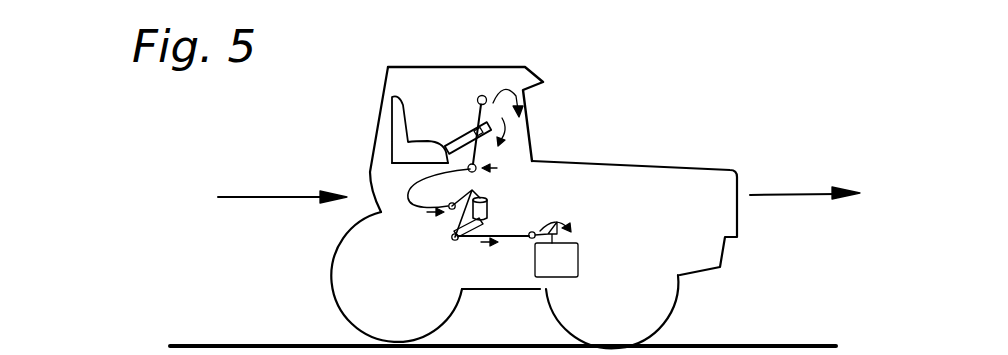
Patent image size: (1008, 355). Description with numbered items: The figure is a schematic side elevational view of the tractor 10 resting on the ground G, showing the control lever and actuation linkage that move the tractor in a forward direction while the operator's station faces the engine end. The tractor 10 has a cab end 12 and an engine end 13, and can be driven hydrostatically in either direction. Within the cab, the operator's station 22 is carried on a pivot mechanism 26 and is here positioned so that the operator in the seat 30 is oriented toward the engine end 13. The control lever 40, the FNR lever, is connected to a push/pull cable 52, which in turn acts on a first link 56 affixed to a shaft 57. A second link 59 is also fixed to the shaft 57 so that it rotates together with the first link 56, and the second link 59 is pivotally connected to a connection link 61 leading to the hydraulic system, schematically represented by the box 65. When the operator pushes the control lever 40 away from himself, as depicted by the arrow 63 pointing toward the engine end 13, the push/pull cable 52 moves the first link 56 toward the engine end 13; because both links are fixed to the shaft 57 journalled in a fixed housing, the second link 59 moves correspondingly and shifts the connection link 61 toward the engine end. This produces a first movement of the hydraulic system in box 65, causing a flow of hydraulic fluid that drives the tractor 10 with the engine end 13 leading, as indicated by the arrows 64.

The tractor 10 is at (670, 73).
The cab end 12 is at (387, 77).
The engine end 13 is at (712, 167).
The operator's station 22 is at (433, 116).
The pivot mechanism 26 is at (488, 212).
The seat 30 is at (392, 128).
The control lever 40 is at (485, 95).
The push/pull cable 52 is at (408, 199).
The first link 56 is at (461, 212).
The shaft 57 is at (488, 196).
The second link 59 is at (452, 237).
The connection link 61 is at (513, 238).
The arrow 63 is at (545, 84).
The arrows 64 is at (280, 195).
The box 65 is at (578, 260).
The ground G is at (738, 344).